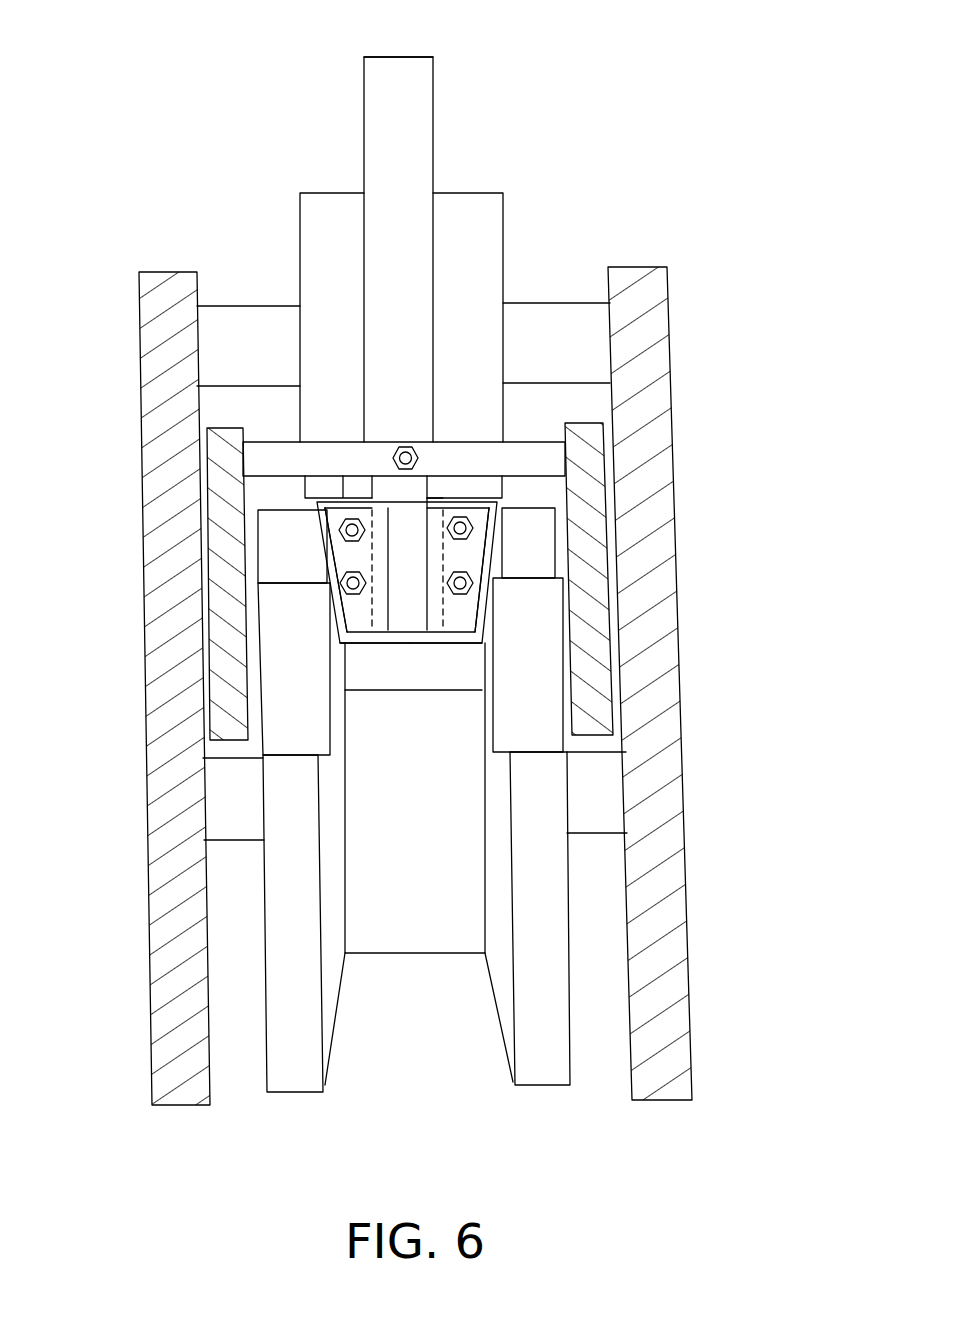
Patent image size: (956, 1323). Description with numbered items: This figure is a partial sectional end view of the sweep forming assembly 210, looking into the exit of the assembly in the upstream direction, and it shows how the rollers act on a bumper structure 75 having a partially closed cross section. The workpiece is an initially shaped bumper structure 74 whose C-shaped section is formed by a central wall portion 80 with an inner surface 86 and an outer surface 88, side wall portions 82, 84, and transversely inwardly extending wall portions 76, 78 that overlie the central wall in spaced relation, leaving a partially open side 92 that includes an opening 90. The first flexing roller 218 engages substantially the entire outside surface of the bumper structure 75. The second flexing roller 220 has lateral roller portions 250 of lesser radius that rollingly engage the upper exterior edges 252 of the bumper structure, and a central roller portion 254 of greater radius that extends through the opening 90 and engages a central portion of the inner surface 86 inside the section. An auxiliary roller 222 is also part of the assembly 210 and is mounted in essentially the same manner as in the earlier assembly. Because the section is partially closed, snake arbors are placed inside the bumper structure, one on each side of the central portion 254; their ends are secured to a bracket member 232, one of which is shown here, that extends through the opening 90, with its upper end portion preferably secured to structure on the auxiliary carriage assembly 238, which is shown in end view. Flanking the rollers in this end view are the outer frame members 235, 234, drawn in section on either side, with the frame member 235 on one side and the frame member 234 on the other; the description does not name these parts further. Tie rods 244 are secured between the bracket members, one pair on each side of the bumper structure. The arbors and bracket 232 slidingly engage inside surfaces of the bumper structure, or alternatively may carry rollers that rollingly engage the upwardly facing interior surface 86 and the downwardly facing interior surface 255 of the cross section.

The sweep forming assembly 210 is at (680, 196).
The second driven flexing roller 220 is at (445, 77).
The central roller portion 254 is at (375, 88).
The lateral roller portions 250 is at (327, 213).
The left frame member 235 is at (160, 750).
The right frame member 234 is at (670, 763).
The auxiliary carriage assembly 238 is at (628, 462).
The upper exterior edges 252 is at (335, 500).
The transversely inwardly extending wall portion 76 is at (343, 497).
The transversely inwardly extending wall portion 78 is at (478, 497).
The partially open side 92 is at (408, 485).
The bumper structure 75 is at (361, 485).
The opening 90 is at (441, 485).
The initially shaped bumper structure 74 is at (518, 545).
The tie rods 244 is at (340, 532).
The downwardly facing interior surface 255 is at (497, 521).
The side wall portion 84 is at (490, 600).
The side wall portion 82 is at (330, 592).
The inner surface 86 is at (330, 632).
The central wall portion 80 is at (453, 640).
The bracket member 232 is at (407, 612).
The outer surface 88 is at (378, 692).
The auxiliary roller 222 is at (283, 735).
The first driven flexing roller 218 is at (292, 1062).